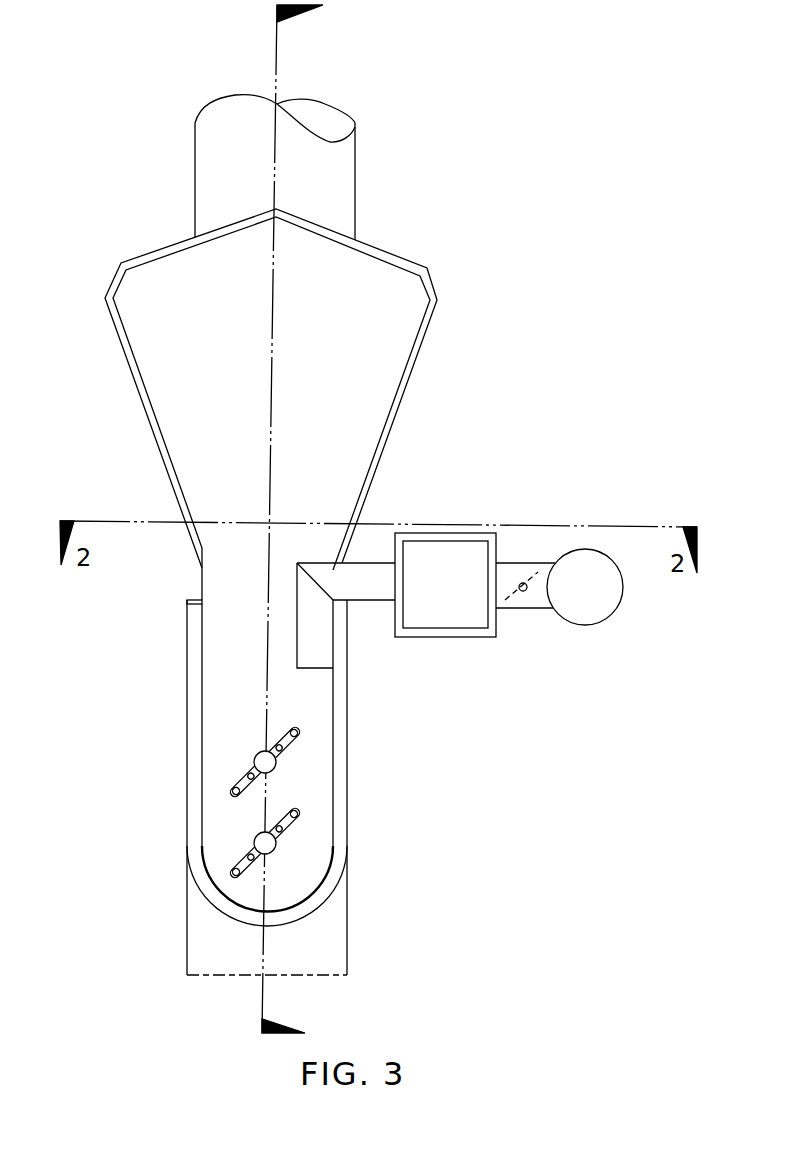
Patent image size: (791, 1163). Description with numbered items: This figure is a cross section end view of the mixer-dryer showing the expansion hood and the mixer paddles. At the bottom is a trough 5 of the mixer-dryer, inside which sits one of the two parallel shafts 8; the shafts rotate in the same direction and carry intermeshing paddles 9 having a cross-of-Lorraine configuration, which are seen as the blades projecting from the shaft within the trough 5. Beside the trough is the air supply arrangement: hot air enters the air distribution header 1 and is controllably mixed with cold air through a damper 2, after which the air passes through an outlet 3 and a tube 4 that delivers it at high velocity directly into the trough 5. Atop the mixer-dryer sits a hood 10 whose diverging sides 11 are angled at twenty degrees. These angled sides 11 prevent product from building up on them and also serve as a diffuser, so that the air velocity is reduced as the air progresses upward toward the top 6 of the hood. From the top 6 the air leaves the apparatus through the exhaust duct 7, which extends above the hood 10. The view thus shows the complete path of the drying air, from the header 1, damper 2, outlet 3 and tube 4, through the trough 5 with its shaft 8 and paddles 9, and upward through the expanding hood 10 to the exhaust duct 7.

The air distribution header 1 is at (497, 632).
The dampers 2 is at (527, 577).
The outlets 3 is at (445, 584).
The tubes 4 is at (313, 563).
The troughs 5 is at (347, 718).
The top of the hood 6 is at (295, 519).
The exhaust duct 7 is at (356, 178).
The parallel shafts 8 is at (277, 767).
The paddles 9 is at (293, 823).
The hood 10 is at (380, 424).
The diverging sides 11 is at (420, 352).